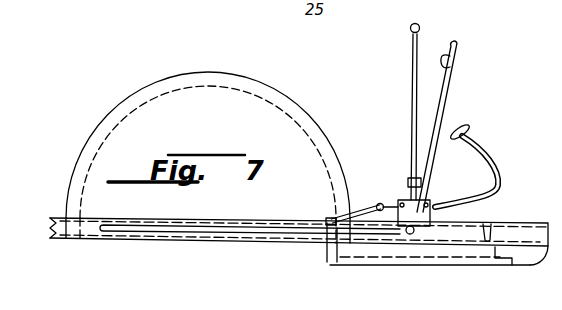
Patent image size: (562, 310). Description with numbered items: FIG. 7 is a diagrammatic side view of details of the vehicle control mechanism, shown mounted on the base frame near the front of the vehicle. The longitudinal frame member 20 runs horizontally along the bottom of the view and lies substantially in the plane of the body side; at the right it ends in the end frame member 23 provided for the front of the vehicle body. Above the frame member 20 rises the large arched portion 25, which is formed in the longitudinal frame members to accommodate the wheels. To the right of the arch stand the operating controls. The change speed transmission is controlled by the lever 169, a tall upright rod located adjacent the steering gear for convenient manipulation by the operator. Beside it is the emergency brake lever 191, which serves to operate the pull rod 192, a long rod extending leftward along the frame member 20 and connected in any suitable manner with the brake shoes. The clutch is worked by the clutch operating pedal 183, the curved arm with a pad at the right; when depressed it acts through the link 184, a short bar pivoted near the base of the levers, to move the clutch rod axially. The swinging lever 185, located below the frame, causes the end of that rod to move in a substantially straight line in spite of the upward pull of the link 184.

The longitudinal frame member 20 is at (53, 231).
The end frame member 23 is at (541, 222).
The arched portion 25 is at (214, 75).
The lever 169 is at (412, 62).
The clutch operating pedal 183 is at (476, 135).
The link 184 is at (362, 206).
The swinging lever 185 is at (326, 248).
The emergency brake lever 191 is at (450, 97).
The pull rod 192 is at (220, 236).